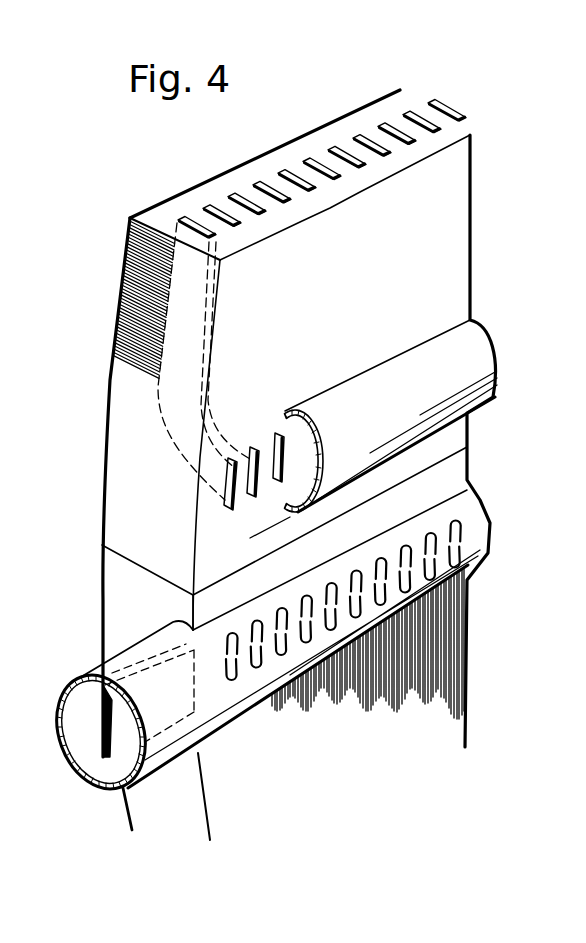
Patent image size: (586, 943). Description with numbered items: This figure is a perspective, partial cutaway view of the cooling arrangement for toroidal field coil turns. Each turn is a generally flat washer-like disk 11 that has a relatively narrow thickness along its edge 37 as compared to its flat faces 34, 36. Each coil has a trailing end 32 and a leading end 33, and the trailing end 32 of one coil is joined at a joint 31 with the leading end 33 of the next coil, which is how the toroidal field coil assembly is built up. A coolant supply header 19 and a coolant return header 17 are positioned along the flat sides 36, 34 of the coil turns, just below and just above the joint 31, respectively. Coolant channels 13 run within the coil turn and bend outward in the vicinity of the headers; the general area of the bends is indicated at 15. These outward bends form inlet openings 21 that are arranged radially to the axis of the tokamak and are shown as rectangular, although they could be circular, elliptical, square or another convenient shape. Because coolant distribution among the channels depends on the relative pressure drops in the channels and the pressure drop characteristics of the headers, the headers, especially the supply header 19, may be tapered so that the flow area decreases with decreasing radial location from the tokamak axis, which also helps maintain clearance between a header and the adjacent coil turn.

The washer-like disk 11 is at (443, 268).
The coolant channels 13 is at (193, 223).
The bend area 15 is at (158, 390).
The coolant return header 17 is at (467, 352).
The coolant supply header 19 is at (480, 523).
The inlet openings 21 is at (458, 543).
The joint 31 is at (467, 443).
The trailing end 32 is at (118, 550).
The leading end 33 is at (140, 568).
The flat face 34 is at (343, 237).
The flat face 36 is at (347, 742).
The edge 37 is at (140, 285).